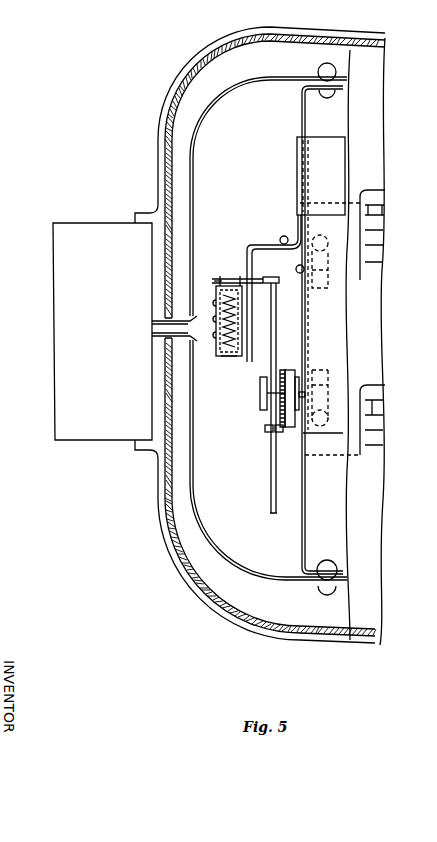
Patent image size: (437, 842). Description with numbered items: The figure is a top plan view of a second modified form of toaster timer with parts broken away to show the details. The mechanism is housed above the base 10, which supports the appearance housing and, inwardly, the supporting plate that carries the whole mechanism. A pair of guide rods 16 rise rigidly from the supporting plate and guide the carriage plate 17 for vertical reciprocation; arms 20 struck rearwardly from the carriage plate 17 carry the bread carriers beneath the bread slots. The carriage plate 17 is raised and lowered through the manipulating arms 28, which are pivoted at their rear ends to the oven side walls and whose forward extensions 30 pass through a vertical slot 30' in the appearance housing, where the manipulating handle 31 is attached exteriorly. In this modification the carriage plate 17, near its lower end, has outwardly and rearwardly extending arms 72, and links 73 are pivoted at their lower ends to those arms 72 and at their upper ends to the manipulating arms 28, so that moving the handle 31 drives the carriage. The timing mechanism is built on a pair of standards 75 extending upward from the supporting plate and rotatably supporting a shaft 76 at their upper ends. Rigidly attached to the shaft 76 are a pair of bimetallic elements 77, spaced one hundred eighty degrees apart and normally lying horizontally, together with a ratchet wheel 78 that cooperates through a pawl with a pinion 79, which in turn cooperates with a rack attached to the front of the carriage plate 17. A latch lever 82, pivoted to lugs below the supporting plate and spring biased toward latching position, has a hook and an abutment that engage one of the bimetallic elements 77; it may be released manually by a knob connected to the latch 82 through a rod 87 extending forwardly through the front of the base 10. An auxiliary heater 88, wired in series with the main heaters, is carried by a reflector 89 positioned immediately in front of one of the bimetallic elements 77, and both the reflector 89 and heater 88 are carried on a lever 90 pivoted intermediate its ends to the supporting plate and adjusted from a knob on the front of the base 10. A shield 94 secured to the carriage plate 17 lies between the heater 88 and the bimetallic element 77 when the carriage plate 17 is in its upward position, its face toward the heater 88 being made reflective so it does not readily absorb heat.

The base 10 is at (218, 606).
The guide rods 16 is at (329, 422).
The carriage plate 17 is at (310, 306).
The arms 20 is at (313, 457).
The manipulating arms 28 is at (343, 75).
The forward extensions 30 is at (157, 307).
The vertical slot 30' is at (158, 349).
The manipulating handle 31 is at (53, 327).
The arms 72 is at (306, 528).
The links 73 is at (312, 80).
The standards 75 is at (261, 392).
The shaft 76 is at (262, 408).
The bimetallic elements 77 is at (277, 322).
The ratchet wheel 78 is at (288, 395).
The pinion 79 is at (287, 438).
The latch lever 82 is at (266, 280).
The rod 87 is at (228, 278).
The auxiliary heater 88 is at (221, 280).
The reflector 89 is at (229, 356).
The lever 90 is at (217, 303).
The shield 94 is at (249, 245).